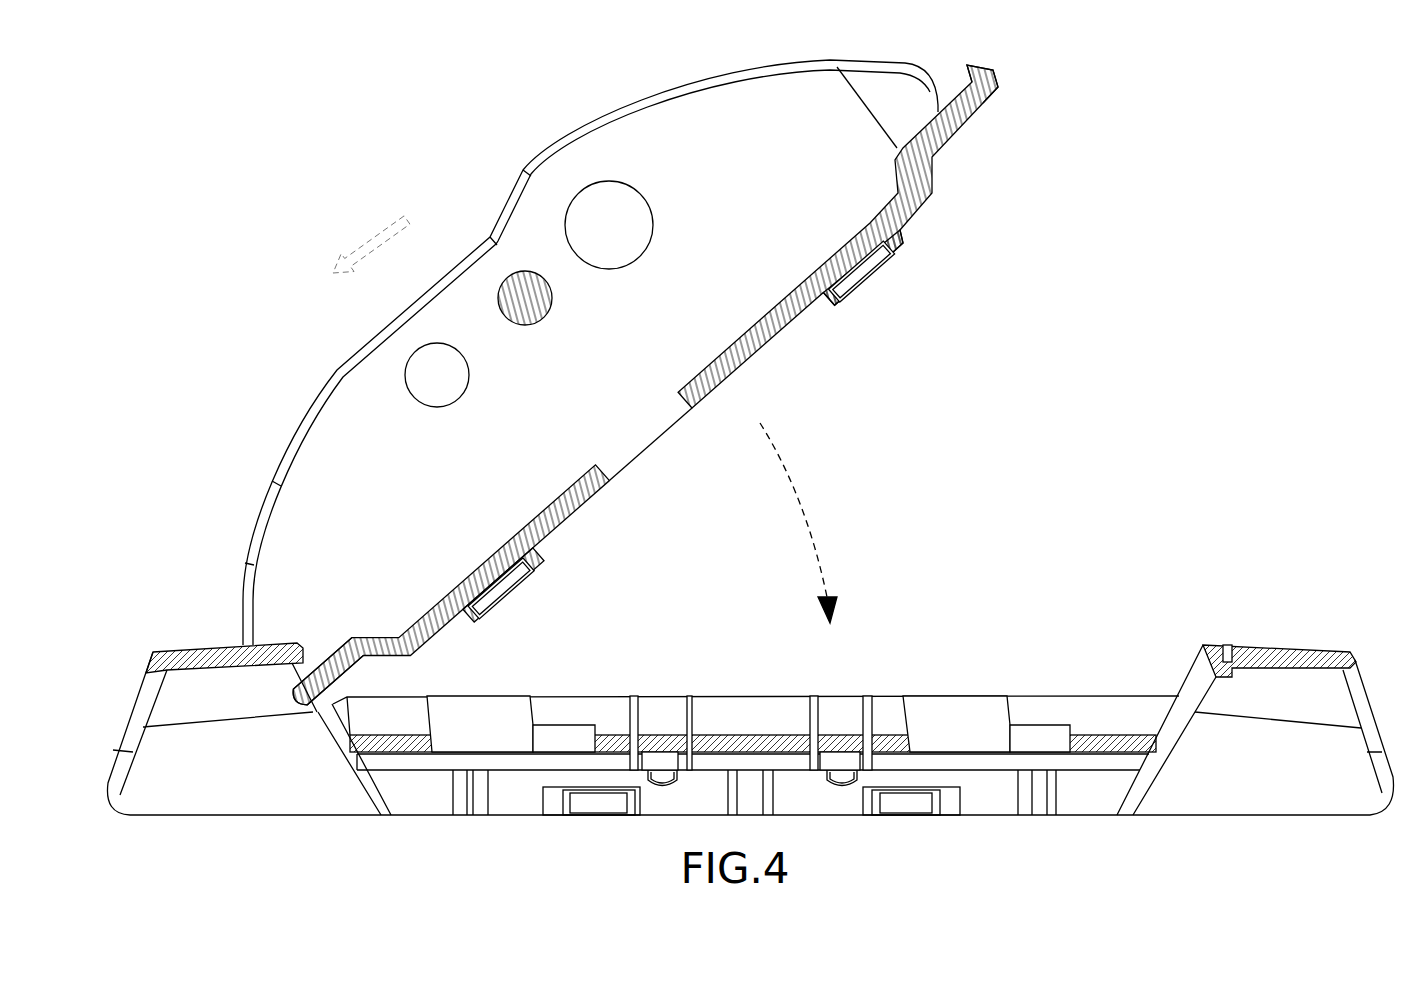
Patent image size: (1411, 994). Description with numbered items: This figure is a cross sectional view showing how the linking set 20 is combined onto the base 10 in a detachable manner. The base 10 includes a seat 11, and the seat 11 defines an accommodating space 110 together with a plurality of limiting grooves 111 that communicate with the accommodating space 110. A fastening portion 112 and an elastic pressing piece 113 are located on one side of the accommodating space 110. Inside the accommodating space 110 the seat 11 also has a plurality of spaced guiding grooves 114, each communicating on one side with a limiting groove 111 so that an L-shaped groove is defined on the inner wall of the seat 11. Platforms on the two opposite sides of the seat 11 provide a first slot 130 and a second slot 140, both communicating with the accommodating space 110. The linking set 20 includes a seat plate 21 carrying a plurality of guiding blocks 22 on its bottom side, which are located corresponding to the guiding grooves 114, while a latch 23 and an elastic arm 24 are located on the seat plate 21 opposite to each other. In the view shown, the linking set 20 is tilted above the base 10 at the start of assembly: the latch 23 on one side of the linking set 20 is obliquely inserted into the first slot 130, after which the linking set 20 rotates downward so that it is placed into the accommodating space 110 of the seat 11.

The base 10 is at (750, 699).
The seat 11 is at (512, 763).
The linking set 20 is at (988, 191).
The seat plate 21 is at (757, 337).
The guiding blocks 22 is at (905, 248).
The latch 23 is at (300, 696).
The elastic arm 24 is at (985, 92).
The accommodating space 110 is at (742, 706).
The limiting grooves 111 is at (560, 740).
The fastening portion 112 is at (1227, 660).
The elastic pressing piece 113 is at (1267, 652).
The guiding grooves 114 is at (487, 737).
The first slot 130 is at (333, 725).
The second slot 140 is at (1167, 727).